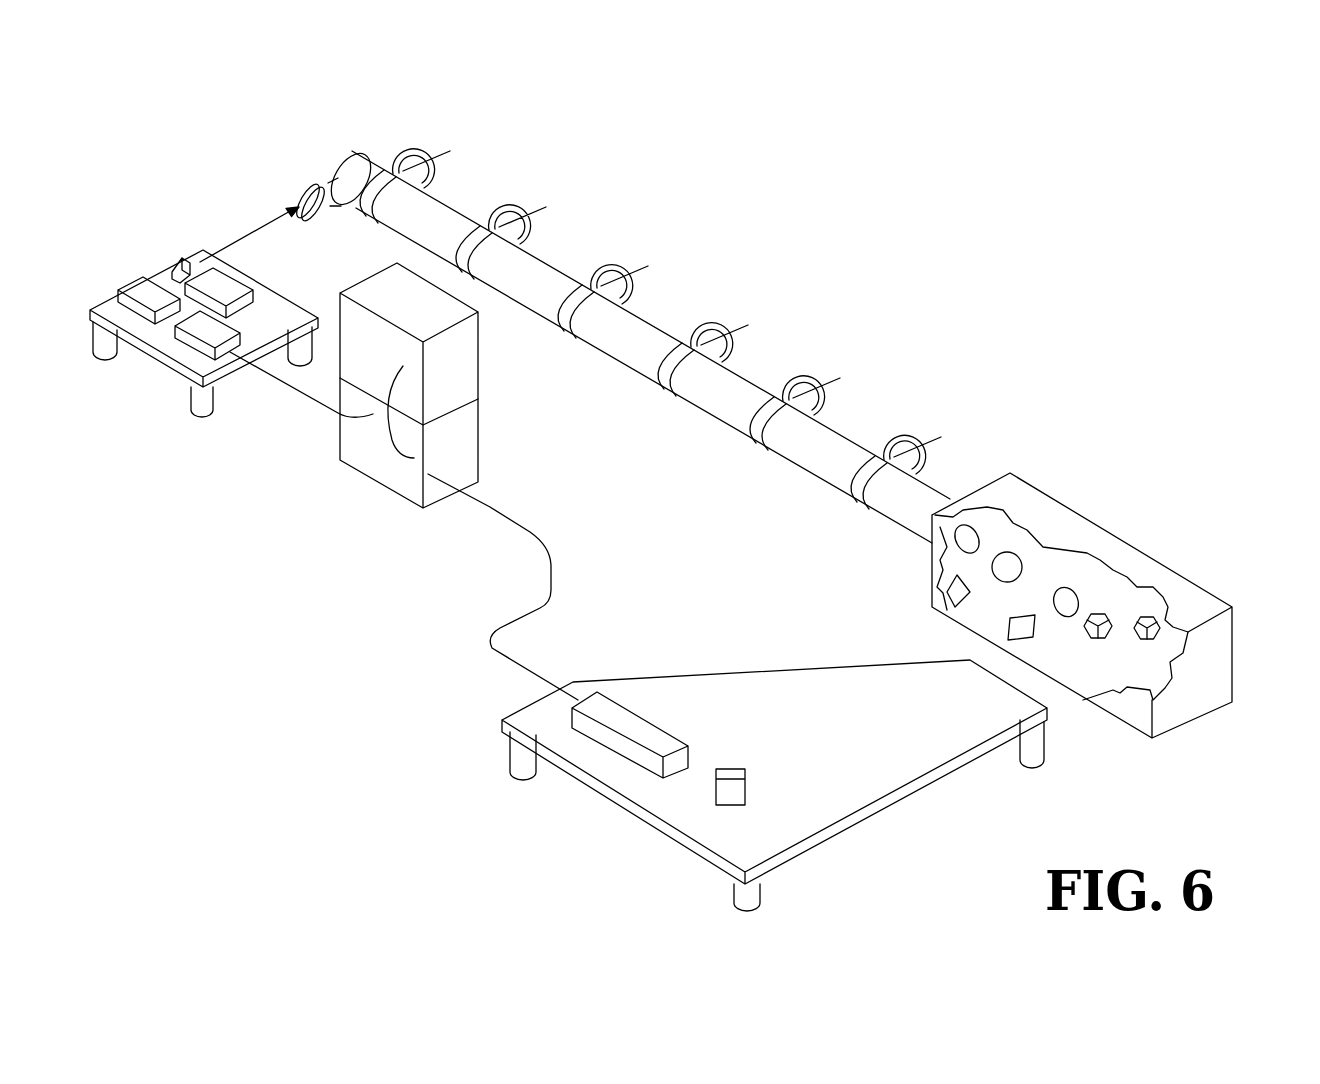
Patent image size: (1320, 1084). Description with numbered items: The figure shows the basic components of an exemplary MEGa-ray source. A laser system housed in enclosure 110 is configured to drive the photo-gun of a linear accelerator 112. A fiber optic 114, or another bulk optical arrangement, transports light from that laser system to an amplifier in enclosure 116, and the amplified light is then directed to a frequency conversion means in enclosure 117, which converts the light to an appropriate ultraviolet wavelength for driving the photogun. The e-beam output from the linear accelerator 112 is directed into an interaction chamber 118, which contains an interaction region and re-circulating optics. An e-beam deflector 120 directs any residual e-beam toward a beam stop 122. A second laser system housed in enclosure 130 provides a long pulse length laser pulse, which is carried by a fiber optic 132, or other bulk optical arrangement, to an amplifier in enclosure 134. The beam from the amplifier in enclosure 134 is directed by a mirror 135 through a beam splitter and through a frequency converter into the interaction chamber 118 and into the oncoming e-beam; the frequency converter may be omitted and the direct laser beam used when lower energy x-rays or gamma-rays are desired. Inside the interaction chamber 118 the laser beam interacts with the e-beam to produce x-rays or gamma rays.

The enclosure 110 is at (436, 400).
The linear accelerator 112 is at (362, 156).
The fiber optic 114 is at (297, 393).
The enclosure 116 is at (207, 337).
The enclosure 117 is at (213, 287).
The interaction chamber 118 is at (1100, 593).
The e-beam deflector 120 is at (1102, 617).
The beam stop 122 is at (1158, 621).
The enclosure 130 is at (462, 383).
The fiber optic 132 is at (488, 507).
The enclosure 134 is at (613, 737).
The mirror 135 is at (747, 783).